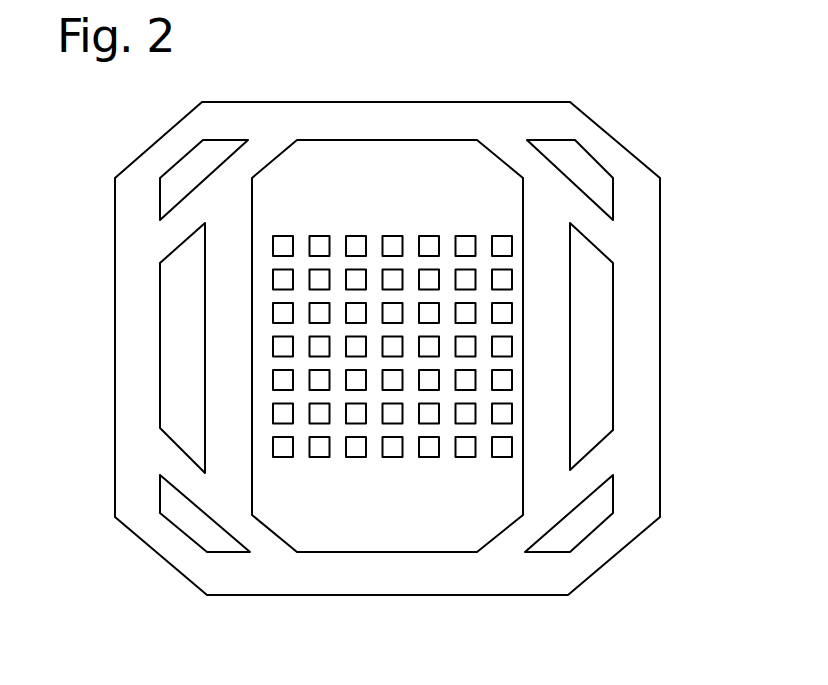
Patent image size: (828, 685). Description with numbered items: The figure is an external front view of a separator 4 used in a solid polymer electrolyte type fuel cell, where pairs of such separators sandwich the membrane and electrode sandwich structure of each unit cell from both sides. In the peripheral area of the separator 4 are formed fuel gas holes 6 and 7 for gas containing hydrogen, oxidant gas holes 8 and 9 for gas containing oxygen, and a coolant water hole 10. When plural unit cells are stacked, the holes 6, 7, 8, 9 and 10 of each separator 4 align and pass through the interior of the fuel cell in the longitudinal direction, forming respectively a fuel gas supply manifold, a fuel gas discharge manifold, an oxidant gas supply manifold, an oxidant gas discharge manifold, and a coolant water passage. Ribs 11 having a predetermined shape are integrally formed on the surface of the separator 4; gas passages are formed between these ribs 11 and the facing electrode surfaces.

The separator 4 is at (545, 99).
The fuel gas hole 6 is at (377, 153).
The fuel gas hole 7 is at (388, 543).
The oxidant gas hole 8 is at (172, 338).
The oxidant gas hole 9 is at (595, 342).
The coolant water hole 10 is at (182, 164).
The ribs 11 is at (283, 379).